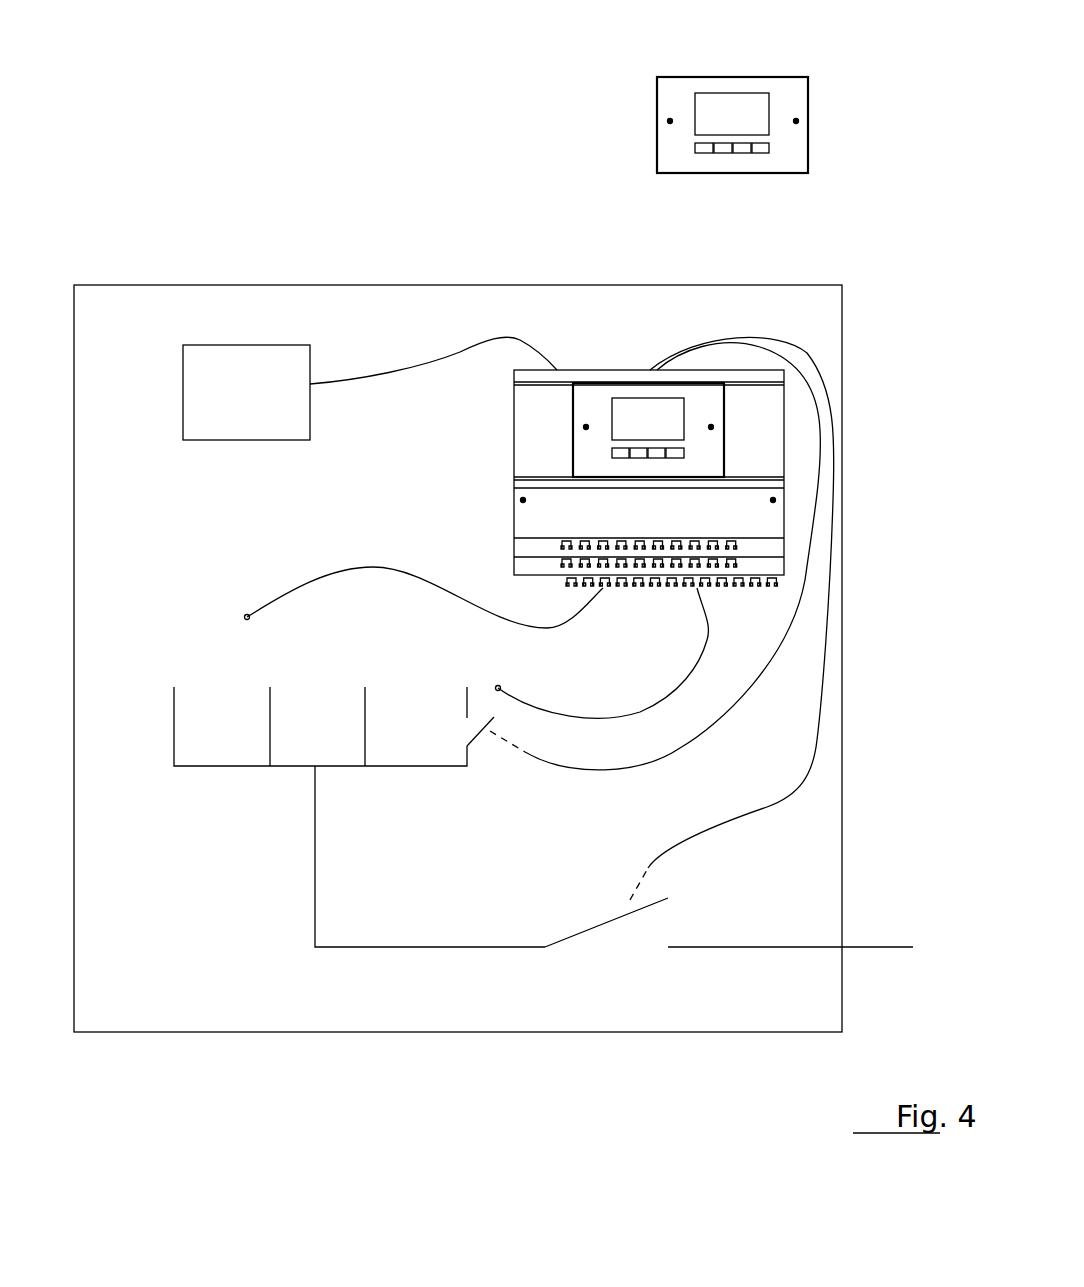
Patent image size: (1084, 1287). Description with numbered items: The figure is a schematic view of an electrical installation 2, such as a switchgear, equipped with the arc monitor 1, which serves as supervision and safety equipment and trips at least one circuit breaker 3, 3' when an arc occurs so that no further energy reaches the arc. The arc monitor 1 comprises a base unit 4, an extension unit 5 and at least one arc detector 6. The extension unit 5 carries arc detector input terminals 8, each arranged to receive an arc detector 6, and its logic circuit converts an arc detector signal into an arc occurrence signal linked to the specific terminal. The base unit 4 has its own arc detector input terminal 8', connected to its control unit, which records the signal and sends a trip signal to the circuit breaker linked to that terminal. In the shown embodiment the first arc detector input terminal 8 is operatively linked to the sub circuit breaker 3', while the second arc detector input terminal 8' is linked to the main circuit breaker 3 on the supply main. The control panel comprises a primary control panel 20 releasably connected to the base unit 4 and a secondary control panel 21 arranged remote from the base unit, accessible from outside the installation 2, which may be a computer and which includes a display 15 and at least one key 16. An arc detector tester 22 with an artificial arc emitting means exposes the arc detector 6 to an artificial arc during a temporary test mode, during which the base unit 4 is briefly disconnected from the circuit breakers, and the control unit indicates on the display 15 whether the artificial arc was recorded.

The arc monitor 1 is at (689, 440).
The electrical installation 2 is at (247, 1015).
The main circuit breaker 3 is at (689, 642).
The sub circuit breaker 3' is at (643, 575).
The base unit 4 is at (524, 434).
The extension unit 5 is at (524, 517).
The arc detector 6 is at (298, 588).
The arc detector input terminal 8 is at (722, 604).
The arc detector input terminal of the base unit 8' is at (627, 617).
The display 15 is at (727, 101).
The key 16 is at (722, 153).
The primary control panel 20 is at (710, 418).
The secondary control panel 21 is at (683, 120).
The arc detector tester 22 is at (232, 373).